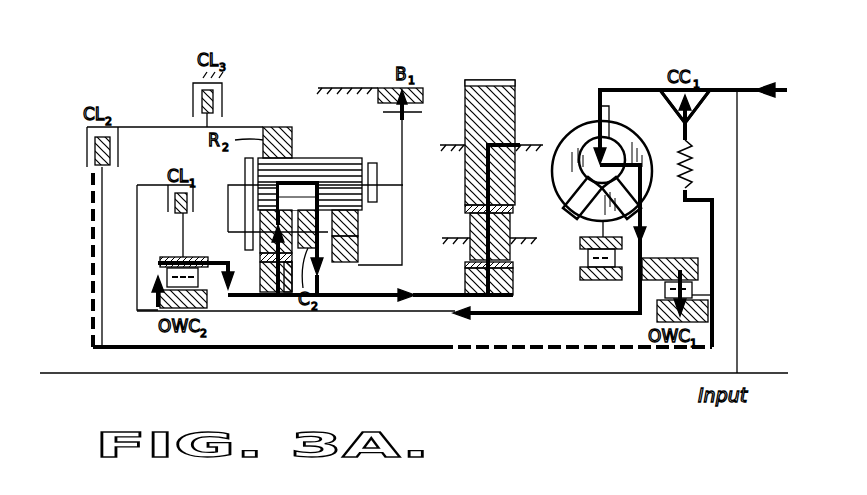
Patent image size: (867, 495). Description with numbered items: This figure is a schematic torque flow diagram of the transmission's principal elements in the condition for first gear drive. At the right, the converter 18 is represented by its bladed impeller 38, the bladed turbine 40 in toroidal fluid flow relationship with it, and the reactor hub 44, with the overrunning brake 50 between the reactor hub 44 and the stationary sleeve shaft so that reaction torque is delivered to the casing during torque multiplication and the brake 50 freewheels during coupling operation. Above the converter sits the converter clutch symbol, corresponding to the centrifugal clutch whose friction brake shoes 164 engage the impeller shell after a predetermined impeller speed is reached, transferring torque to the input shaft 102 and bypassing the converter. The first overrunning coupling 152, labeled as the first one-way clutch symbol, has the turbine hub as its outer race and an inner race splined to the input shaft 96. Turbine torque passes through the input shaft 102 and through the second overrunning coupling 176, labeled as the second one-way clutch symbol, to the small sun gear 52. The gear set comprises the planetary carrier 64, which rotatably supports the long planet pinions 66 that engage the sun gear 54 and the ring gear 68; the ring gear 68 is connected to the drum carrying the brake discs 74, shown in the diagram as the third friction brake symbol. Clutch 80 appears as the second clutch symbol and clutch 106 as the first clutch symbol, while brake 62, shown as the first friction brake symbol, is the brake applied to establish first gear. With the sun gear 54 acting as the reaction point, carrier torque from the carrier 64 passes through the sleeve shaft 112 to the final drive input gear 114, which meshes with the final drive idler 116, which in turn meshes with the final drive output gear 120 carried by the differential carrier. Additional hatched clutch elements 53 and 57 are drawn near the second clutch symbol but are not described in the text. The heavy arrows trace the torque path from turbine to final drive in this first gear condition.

The converter 18 is at (615, 104).
The bladed impeller 38 is at (575, 127).
The bladed turbine 40 is at (622, 133).
The reactor hub 44 is at (580, 213).
The overrunning brake 50 is at (583, 281).
The small sun gear 52 is at (348, 217).
The clutch pack 53 is at (263, 291).
The sun gear 54 is at (342, 258).
The clutch drum 57 is at (293, 293).
The brake 62 is at (420, 88).
The planetary carrier 64 is at (372, 163).
The long planet pinions 66 is at (333, 159).
The ring gear 68 is at (279, 126).
The brake discs 74 is at (200, 100).
The clutch 80 is at (95, 150).
The input shaft 96 is at (543, 346).
The input shaft 102 is at (437, 346).
The clutch 106 is at (175, 211).
The sleeve shaft 112 is at (415, 292).
The final drive input gear 114 is at (513, 287).
The final drive idler 116 is at (473, 223).
The final drive output gear 120 is at (490, 87).
The overrunning coupling 152 is at (704, 286).
The friction brake shoes 164 is at (697, 108).
The overrunning coupling 176 is at (188, 270).